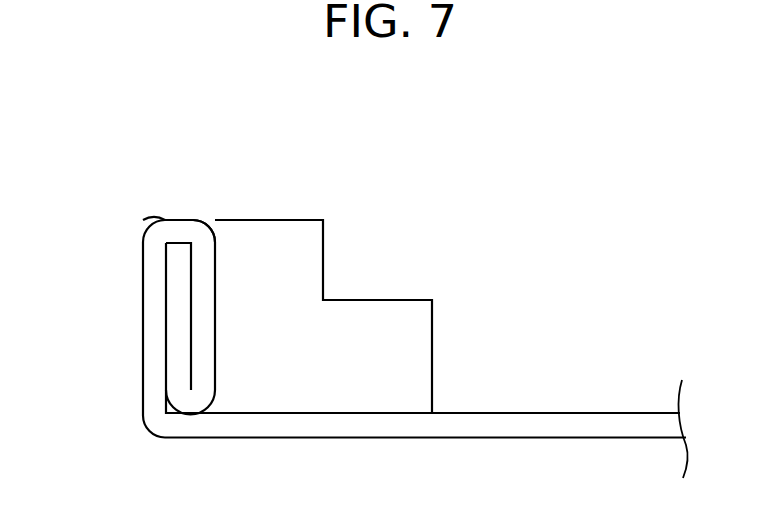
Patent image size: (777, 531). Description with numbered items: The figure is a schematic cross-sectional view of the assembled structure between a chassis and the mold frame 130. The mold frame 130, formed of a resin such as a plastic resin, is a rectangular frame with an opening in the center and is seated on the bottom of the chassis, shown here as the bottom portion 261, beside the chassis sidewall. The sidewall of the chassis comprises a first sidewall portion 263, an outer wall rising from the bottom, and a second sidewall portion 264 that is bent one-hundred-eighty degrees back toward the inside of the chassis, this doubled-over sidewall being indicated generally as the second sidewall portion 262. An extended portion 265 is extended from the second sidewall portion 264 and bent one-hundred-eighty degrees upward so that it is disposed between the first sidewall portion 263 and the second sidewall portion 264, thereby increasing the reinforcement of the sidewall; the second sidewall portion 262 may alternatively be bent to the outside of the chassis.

The second sidewall portion 262 is at (145, 198).
The first sidewall portion 263 is at (155, 375).
The second sidewall portion 264 is at (202, 272).
The extended portion 265 is at (183, 323).
The mold frame 130 is at (235, 402).
The base plate 261 is at (399, 423).